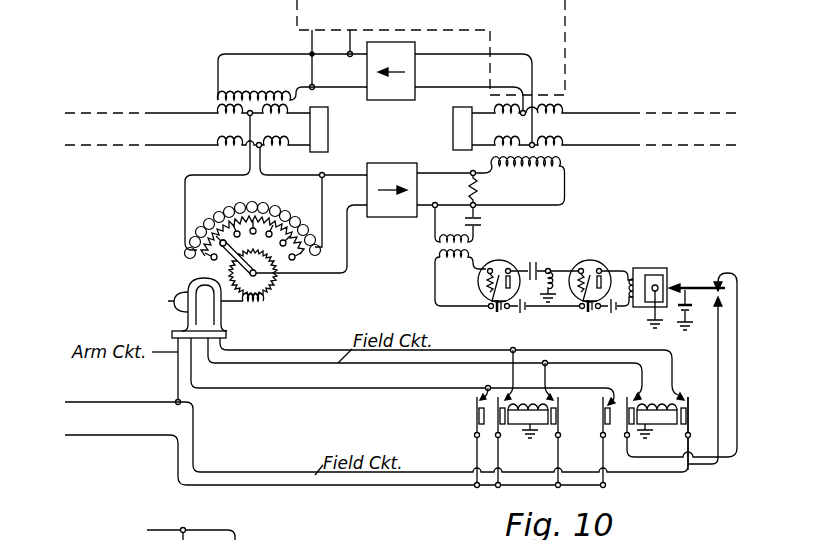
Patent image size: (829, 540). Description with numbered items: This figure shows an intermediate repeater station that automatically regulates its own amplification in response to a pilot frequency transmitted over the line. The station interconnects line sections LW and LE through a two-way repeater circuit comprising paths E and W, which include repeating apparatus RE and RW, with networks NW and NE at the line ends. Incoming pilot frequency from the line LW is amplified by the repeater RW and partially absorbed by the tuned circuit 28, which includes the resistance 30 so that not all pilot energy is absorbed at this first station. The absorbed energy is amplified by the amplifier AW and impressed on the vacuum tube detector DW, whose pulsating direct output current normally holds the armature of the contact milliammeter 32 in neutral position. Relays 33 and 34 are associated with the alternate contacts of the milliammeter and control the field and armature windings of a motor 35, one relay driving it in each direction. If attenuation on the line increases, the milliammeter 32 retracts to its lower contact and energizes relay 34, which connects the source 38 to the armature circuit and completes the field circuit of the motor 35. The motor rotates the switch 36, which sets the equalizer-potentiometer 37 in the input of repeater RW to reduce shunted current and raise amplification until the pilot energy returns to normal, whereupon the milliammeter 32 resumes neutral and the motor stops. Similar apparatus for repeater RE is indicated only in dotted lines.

The tuned circuit 28 is at (487, 222).
The resistance 30 is at (487, 189).
The contact milliammeter 32 is at (661, 264).
The relay 33 is at (648, 413).
The relay 34 is at (477, 403).
The motor 35 is at (221, 316).
The switch 36 is at (258, 262).
The equalizer-potentiometer 37 is at (213, 215).
The source 38 is at (370, 431).
The line section LW is at (128, 122).
The line section LE is at (617, 118).
The path E is at (469, 50).
The repeater RE is at (411, 84).
The west network NW is at (341, 129).
The east network NE is at (452, 124).
The repeater RW is at (400, 173).
The path W is at (491, 181).
The amplifier AW is at (495, 274).
The vacuum tube detector DW is at (585, 274).